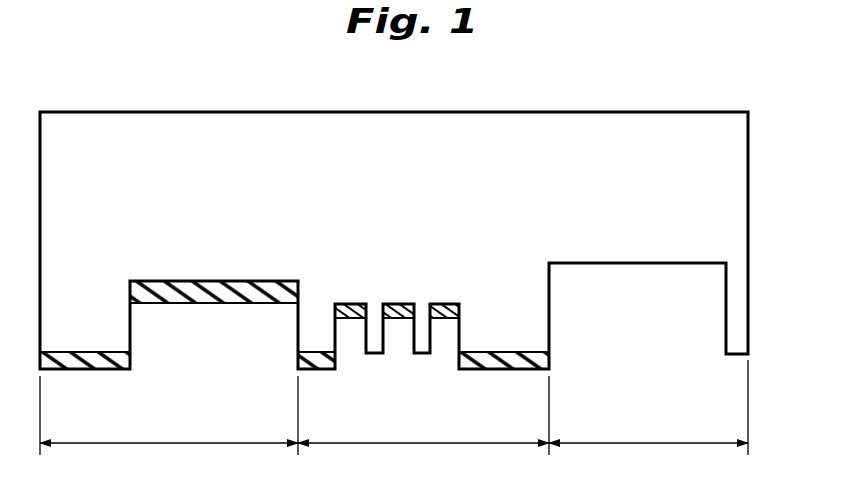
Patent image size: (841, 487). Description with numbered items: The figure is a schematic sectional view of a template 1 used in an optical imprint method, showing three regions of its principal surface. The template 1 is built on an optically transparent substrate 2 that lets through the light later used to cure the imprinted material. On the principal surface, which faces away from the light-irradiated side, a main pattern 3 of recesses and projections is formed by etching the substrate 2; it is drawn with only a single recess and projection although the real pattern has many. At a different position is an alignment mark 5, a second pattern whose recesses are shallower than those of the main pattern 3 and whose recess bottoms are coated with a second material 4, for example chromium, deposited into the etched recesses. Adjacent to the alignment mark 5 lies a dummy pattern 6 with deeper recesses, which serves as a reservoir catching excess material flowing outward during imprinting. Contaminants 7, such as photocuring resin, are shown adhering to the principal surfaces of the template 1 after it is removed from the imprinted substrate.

The template 1 is at (398, 88).
The optically transparent substrate 2 is at (740, 164).
The main pattern 3 is at (169, 425).
The second material 4 is at (438, 303).
The alignment mark 5 is at (423, 425).
The dummy pattern 6 is at (648, 417).
The contaminants 7 is at (294, 340).